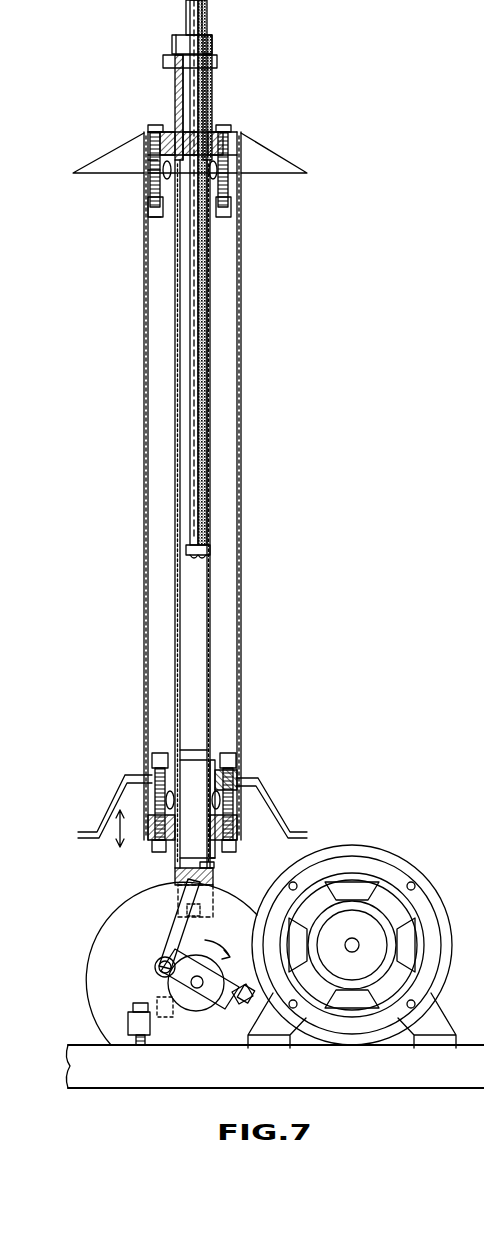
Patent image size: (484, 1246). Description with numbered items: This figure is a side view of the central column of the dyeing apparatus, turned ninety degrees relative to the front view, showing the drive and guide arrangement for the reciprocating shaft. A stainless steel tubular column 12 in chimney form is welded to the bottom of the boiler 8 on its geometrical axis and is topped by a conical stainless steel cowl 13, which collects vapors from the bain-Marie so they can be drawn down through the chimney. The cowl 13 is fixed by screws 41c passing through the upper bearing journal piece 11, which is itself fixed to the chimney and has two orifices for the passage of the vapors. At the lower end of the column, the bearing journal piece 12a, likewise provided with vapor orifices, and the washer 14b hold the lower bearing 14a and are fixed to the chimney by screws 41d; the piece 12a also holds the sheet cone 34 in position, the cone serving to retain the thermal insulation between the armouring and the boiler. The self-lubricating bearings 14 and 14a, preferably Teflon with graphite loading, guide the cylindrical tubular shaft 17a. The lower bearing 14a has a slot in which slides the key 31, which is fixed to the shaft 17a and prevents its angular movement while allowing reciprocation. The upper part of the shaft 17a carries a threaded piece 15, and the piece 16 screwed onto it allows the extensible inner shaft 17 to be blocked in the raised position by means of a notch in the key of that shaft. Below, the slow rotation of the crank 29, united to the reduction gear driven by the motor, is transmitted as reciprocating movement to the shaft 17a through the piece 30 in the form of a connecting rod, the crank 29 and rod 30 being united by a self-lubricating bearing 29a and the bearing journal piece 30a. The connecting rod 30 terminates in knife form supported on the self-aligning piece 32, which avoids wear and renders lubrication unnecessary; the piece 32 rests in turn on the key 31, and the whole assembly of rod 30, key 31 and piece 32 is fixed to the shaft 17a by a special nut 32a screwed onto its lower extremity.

The boiler 8 is at (258, 772).
The bearing journal piece 11 is at (145, 160).
The tubular column 12 is at (238, 372).
The bearing journal piece 12a is at (240, 828).
The cowl 13 is at (270, 168).
The self-lubricating bearing 14 is at (150, 185).
The lower bearing 14a is at (152, 802).
The washer 14b is at (148, 838).
The threaded piece 15 is at (165, 62).
The blocking piece 16 is at (217, 62).
The extensible shaft 17 is at (190, 363).
The tubular shaft 17a is at (211, 618).
The crank 29 is at (158, 983).
The self-lubricating bearing 29a is at (168, 975).
The connecting rod 30 is at (178, 922).
The bearing journal piece 30a is at (155, 958).
The key 31 is at (190, 770).
The self-aligning piece 32 is at (214, 872).
The special nut 32a is at (214, 880).
The sheet cone 34 is at (296, 838).
The screws 41c is at (150, 130).
The screws 41d is at (158, 850).